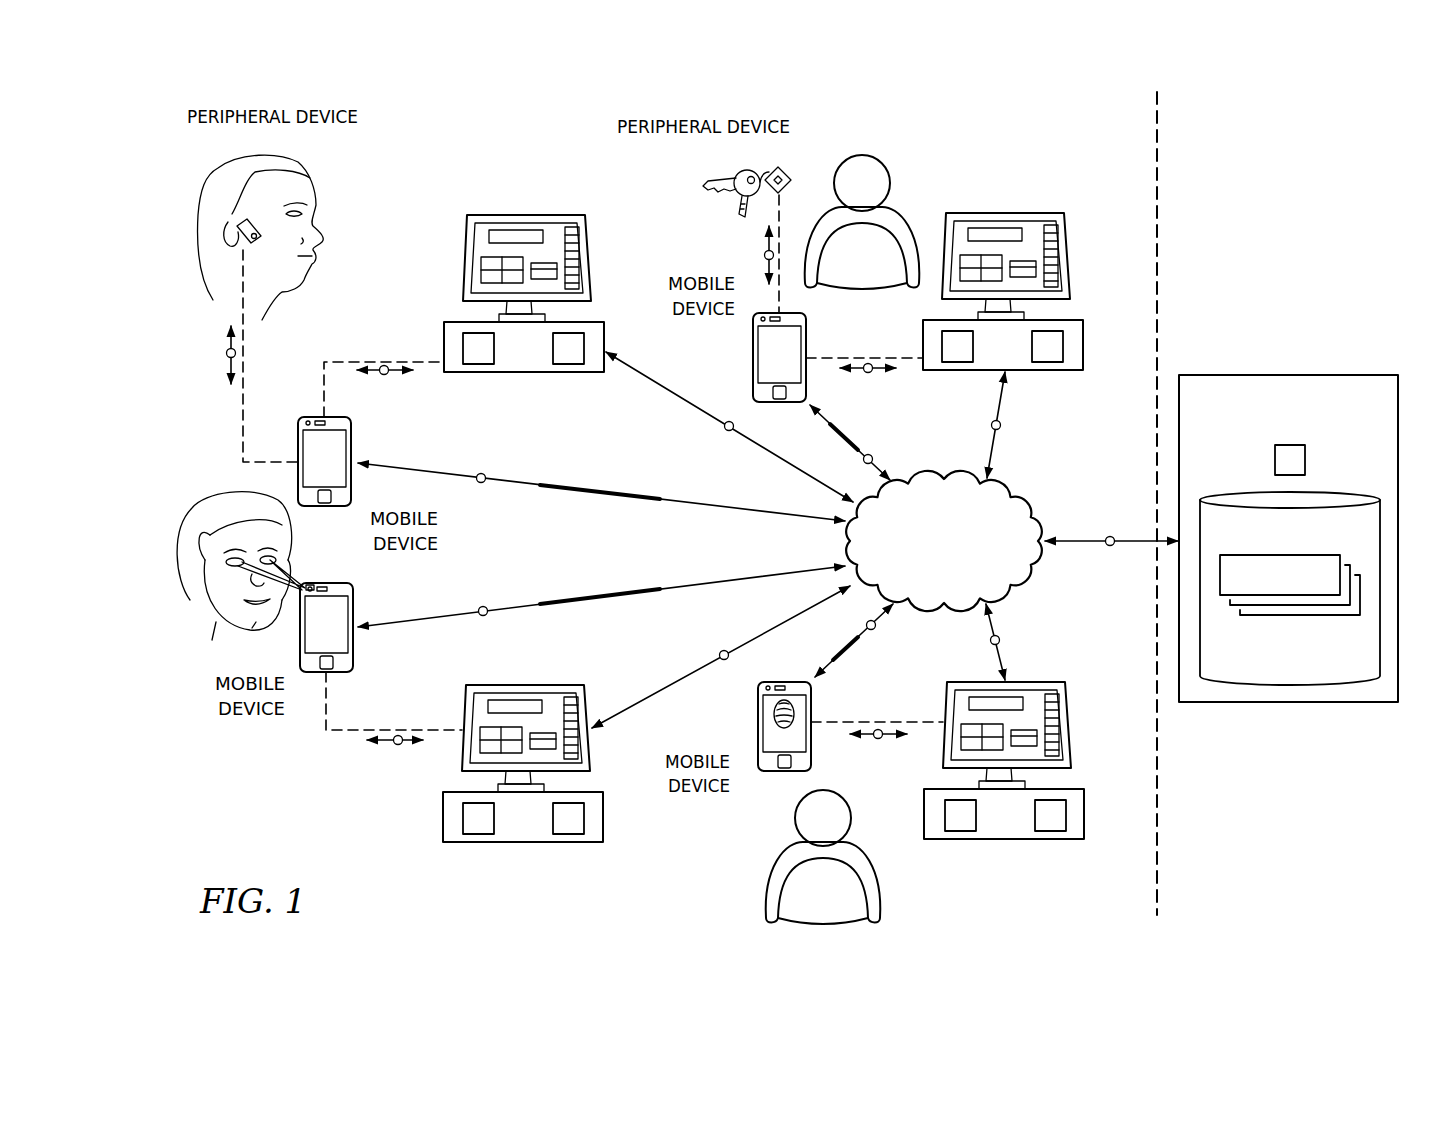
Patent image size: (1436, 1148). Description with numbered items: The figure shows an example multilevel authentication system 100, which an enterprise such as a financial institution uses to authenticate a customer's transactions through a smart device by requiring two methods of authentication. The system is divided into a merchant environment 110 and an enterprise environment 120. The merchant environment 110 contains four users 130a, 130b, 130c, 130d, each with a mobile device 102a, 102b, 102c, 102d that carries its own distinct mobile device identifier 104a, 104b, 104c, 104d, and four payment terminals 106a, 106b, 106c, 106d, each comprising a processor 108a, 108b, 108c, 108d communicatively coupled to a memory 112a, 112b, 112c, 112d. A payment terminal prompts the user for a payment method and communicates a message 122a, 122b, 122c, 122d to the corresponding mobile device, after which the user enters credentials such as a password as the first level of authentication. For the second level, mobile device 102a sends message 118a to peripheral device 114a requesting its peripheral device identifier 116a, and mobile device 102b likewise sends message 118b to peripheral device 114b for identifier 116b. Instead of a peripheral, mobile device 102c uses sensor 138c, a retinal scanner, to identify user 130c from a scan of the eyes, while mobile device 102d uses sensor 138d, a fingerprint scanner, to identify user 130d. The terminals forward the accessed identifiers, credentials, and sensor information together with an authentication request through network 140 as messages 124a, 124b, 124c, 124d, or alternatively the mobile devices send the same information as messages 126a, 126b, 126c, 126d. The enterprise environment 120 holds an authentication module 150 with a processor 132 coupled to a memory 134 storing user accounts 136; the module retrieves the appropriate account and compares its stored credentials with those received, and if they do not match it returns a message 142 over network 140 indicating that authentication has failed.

The multilevel authentication system 100 is at (288, 822).
The mobile device 102a is at (753, 350).
The mobile device 102b is at (353, 485).
The mobile device 102c is at (300, 650).
The mobile device 102d is at (758, 726).
The mobile device identifier 104a is at (774, 393).
The mobile device identifier 104b is at (318, 416).
The mobile device identifier 104c is at (334, 660).
The mobile device identifier 104d is at (783, 768).
The payment terminal 106a is at (1006, 212).
The payment terminal 106b is at (461, 264).
The payment terminal 106c is at (522, 685).
The payment terminal 106d is at (1073, 730).
The processor 108a is at (941, 348).
The processor 108b is at (462, 350).
The processor 108c is at (462, 824).
The processor 108d is at (944, 814).
The merchant environment 110 is at (1137, 157).
The memory 112a is at (1063, 345).
The memory 112b is at (584, 345).
The memory 112c is at (584, 818).
The memory 112d is at (1066, 814).
The peripheral device 114a is at (752, 170).
The peripheral device 114b is at (252, 224).
The peripheral device identifier 116a is at (800, 168).
The peripheral device identifier 116b is at (257, 246).
The message 118a is at (763, 255).
The message 118b is at (226, 353).
The enterprise environment 120 is at (1213, 157).
The message 122a is at (869, 376).
The message 122b is at (385, 378).
The message 122c is at (397, 748).
The message 122d is at (879, 742).
The message 124a is at (1001, 425).
The message 124b is at (725, 430).
The message 124c is at (720, 652).
The message 124d is at (1000, 640).
The message 126a is at (874, 458).
The message 126b is at (480, 473).
The message 126c is at (483, 616).
The message 126d is at (877, 627).
The user 130a is at (908, 228).
The user 130b is at (196, 214).
The user 130c is at (202, 494).
The user 130d is at (780, 874).
The processor 132 is at (1306, 463).
The memory 134 is at (1353, 542).
The user accounts 136 is at (1300, 617).
The sensor 138c is at (313, 583).
The sensor 138d is at (795, 712).
The network 140 is at (925, 570).
The message 142 is at (1112, 548).
The authentication module 150 is at (1346, 372).